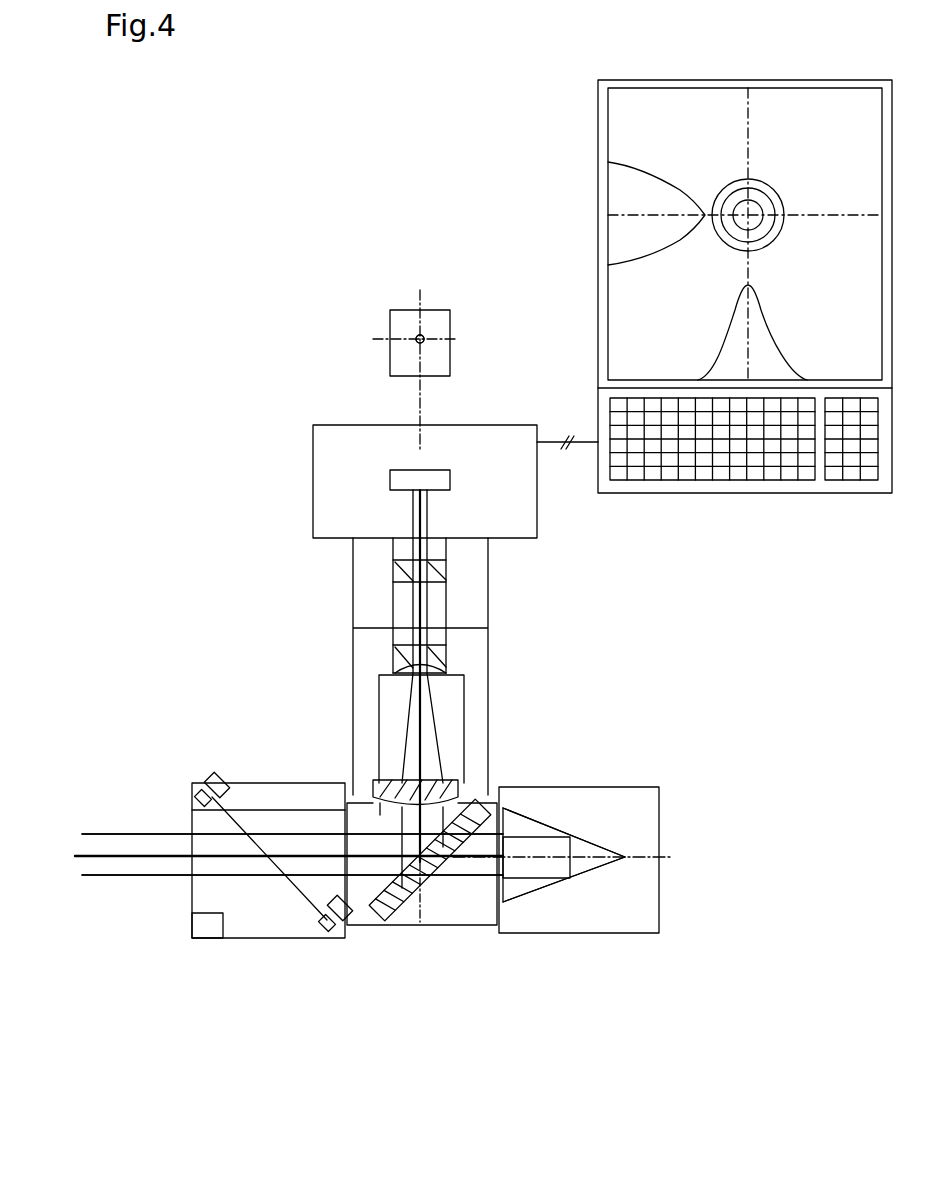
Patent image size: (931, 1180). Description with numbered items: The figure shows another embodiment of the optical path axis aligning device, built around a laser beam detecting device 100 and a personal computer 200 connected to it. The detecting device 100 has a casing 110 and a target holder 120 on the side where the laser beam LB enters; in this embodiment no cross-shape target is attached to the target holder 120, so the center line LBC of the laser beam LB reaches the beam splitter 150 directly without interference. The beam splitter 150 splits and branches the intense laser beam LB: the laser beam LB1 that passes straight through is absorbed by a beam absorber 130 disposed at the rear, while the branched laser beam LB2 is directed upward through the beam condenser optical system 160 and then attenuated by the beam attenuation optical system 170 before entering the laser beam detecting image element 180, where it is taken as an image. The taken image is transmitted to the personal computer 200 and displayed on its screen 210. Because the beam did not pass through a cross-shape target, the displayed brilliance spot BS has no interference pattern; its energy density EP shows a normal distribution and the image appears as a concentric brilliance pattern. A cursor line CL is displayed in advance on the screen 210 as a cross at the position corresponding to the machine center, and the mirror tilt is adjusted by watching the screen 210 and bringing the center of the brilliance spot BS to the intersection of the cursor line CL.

The laser beam detecting device 100 is at (503, 393).
The casing 110 is at (353, 609).
The target holder 120 is at (253, 922).
The beam absorber 130 is at (623, 922).
The beam splitter 150 is at (403, 916).
The beam condenser optical system 160 is at (448, 657).
The beam attenuation optical system 170 is at (447, 572).
The laser beam detecting image element 180 is at (396, 325).
The personal computer 200 is at (705, 72).
The screen 210 is at (622, 117).
The brilliance spot BS is at (422, 337).
The cursor line CL is at (808, 215).
The energy density EP is at (647, 242).
The laser beam LB is at (100, 838).
The laser beam passing through the beam splitter LB1 is at (550, 842).
The laser beam split and branched by the beam splitter LB2 is at (405, 732).
The center line of the laser beam LBC is at (140, 852).